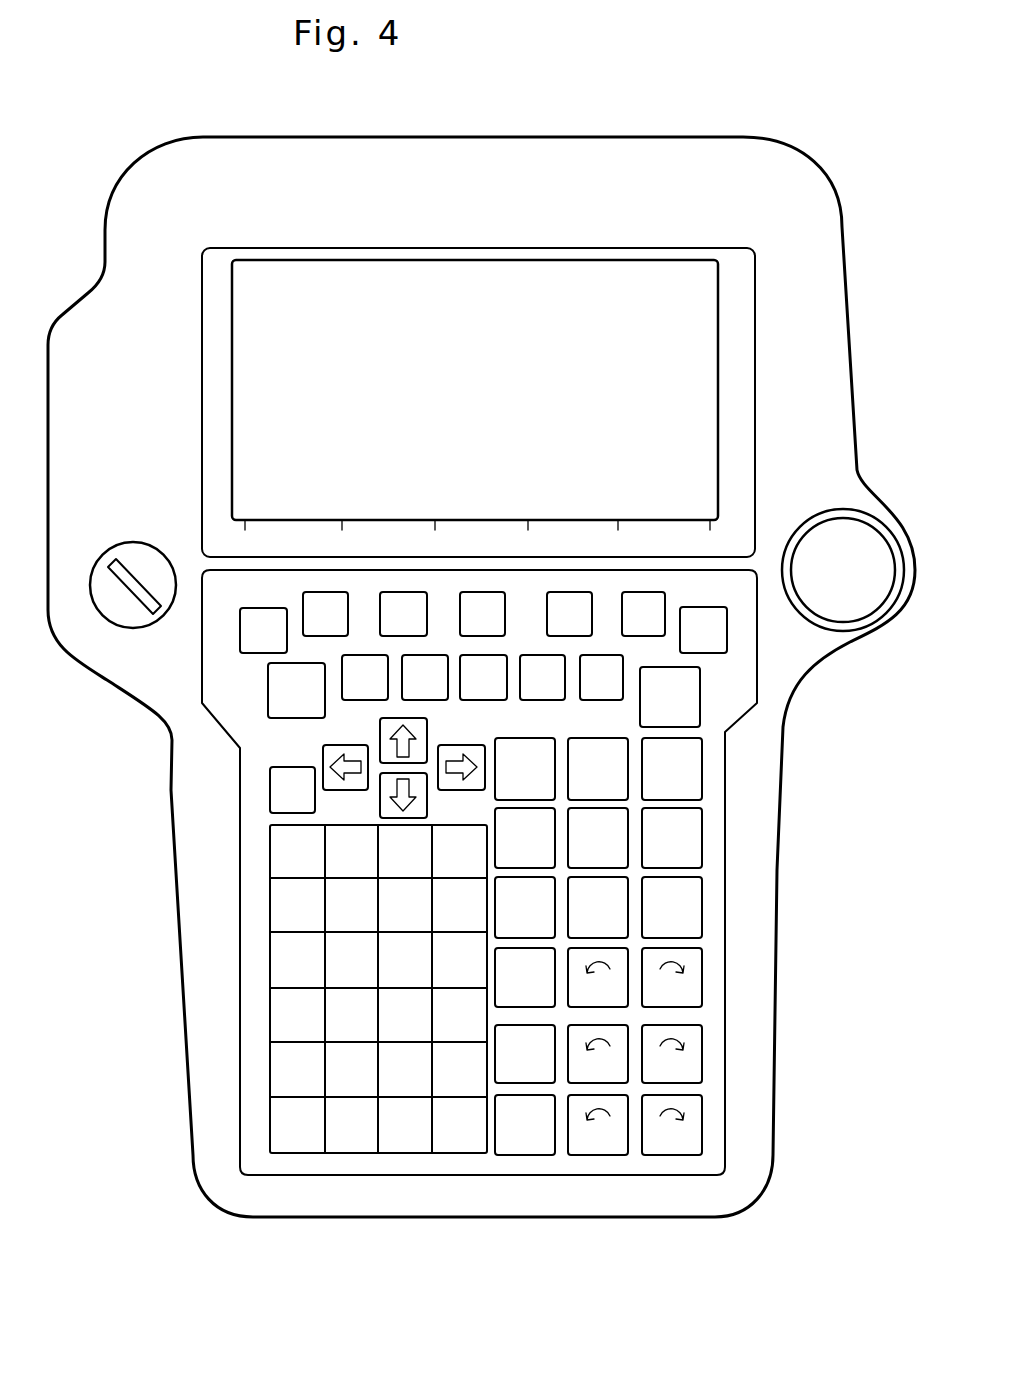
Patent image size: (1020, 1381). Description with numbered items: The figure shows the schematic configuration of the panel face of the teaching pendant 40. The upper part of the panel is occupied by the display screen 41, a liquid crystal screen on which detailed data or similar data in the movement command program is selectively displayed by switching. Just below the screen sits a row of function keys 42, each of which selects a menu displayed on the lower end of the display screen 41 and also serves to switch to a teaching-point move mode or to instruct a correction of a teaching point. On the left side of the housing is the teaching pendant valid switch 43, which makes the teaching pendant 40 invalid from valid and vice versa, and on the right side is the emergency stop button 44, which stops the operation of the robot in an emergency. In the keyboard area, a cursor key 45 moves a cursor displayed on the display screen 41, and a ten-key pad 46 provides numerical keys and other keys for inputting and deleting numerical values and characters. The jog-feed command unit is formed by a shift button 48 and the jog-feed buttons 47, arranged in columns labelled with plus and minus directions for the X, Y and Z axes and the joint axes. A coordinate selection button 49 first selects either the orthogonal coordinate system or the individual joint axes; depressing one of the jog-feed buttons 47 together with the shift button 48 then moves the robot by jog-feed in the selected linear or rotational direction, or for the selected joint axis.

The teaching pendant 40 is at (388, 133).
The display screen 41 is at (672, 295).
The function key 42 is at (303, 623).
The teaching pendant valid switch 43 is at (112, 623).
The emergency stop button 44 is at (835, 527).
The cursor key 45 is at (343, 735).
The ten-key pad 46 is at (268, 1088).
The jog-feed buttons 47 is at (707, 885).
The shift button 48 is at (270, 702).
The coordinate selection button 49 is at (695, 708).